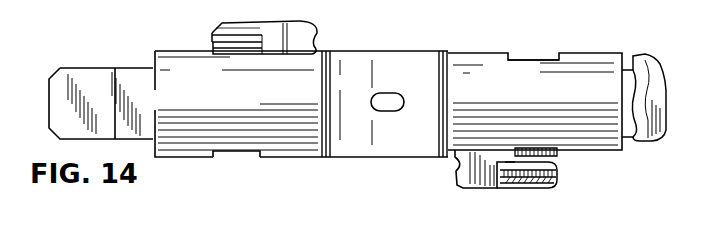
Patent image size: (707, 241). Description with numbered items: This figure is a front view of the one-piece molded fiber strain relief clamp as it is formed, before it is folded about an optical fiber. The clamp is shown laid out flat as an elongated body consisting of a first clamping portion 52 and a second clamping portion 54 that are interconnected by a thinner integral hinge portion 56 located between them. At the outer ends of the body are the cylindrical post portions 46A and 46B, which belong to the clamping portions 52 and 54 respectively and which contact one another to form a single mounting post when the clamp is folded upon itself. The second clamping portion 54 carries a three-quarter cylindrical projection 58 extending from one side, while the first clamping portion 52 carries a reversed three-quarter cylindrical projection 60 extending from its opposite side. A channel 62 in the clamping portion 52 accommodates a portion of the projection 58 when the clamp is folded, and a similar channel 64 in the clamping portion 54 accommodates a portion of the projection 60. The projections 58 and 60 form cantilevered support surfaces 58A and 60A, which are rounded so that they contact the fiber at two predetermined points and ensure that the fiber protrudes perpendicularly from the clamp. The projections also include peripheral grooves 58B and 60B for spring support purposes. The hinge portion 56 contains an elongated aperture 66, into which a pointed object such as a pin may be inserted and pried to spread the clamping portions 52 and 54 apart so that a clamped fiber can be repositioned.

The cylindrical post portion 46A is at (650, 72).
The cylindrical post portion 46B is at (94, 73).
The first clamping portion 52 is at (463, 52).
The second clamping portion 54 is at (181, 50).
The hinge portion 56 is at (430, 58).
The three-quarter cylindrical projection 58 is at (237, 23).
The cantilevered support surface 58A is at (263, 43).
The peripheral groove 58B is at (213, 44).
The reversed three-quarter cylindrical projection 60 is at (534, 188).
The cantilevered support surface 60A is at (496, 168).
The peripheral groove 60B is at (555, 162).
The channel 62 is at (522, 60).
The channel 64 is at (230, 150).
The elongated aperture 66 is at (384, 109).